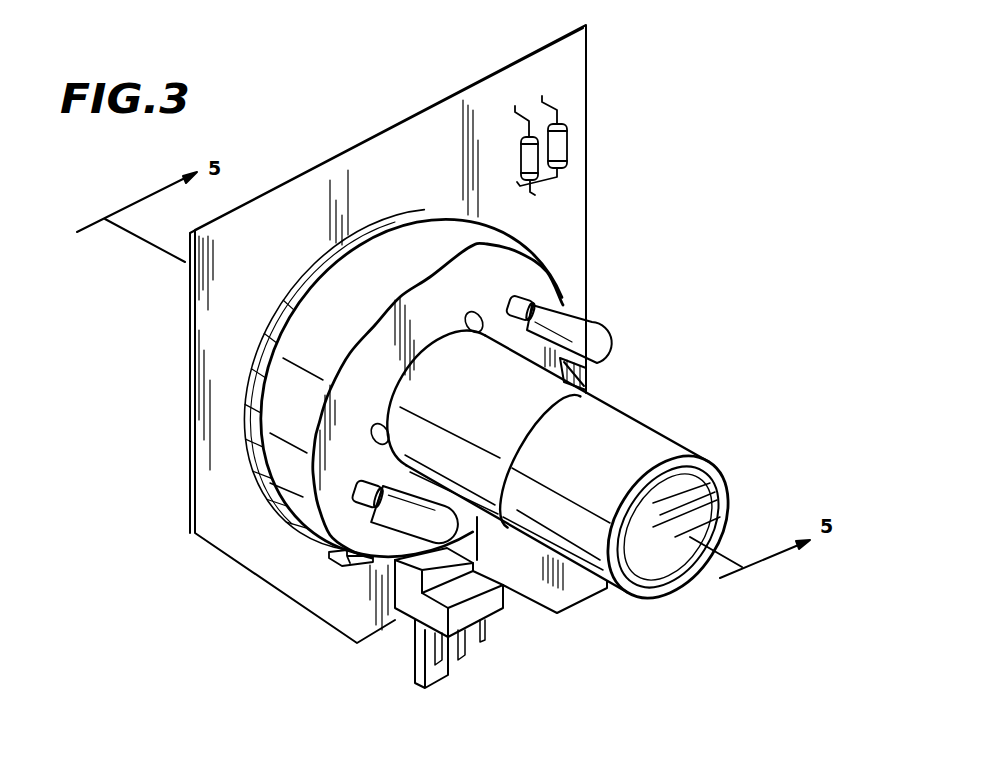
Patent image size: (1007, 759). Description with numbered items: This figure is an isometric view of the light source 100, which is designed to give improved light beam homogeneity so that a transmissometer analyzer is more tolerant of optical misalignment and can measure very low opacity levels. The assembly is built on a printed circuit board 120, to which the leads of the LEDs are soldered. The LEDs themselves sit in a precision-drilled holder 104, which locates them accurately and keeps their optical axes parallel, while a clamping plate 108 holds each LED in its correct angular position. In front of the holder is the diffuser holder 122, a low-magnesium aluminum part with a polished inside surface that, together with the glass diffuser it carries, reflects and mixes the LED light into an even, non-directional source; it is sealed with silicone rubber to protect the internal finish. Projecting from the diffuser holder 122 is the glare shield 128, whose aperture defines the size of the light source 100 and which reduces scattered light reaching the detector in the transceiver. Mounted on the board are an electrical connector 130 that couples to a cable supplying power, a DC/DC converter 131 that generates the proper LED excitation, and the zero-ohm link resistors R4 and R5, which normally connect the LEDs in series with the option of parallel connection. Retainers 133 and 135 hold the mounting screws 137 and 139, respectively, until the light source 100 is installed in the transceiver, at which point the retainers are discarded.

The light source 100 is at (712, 160).
The precision-drilled holder 104 is at (390, 217).
The clamping plate 108 is at (357, 243).
The printed circuit board 120 is at (558, 72).
The diffuser holder 122 is at (523, 282).
The glare shield 128 is at (638, 443).
The electrical connector 130 is at (487, 598).
The DC/DC converter 131 is at (577, 593).
The retainer 133 is at (607, 342).
The retainer 135 is at (397, 533).
The mounting screw 137 is at (553, 282).
The mounting screw 139 is at (332, 524).
The resistor R4 is at (560, 213).
The resistor R5 is at (567, 143).